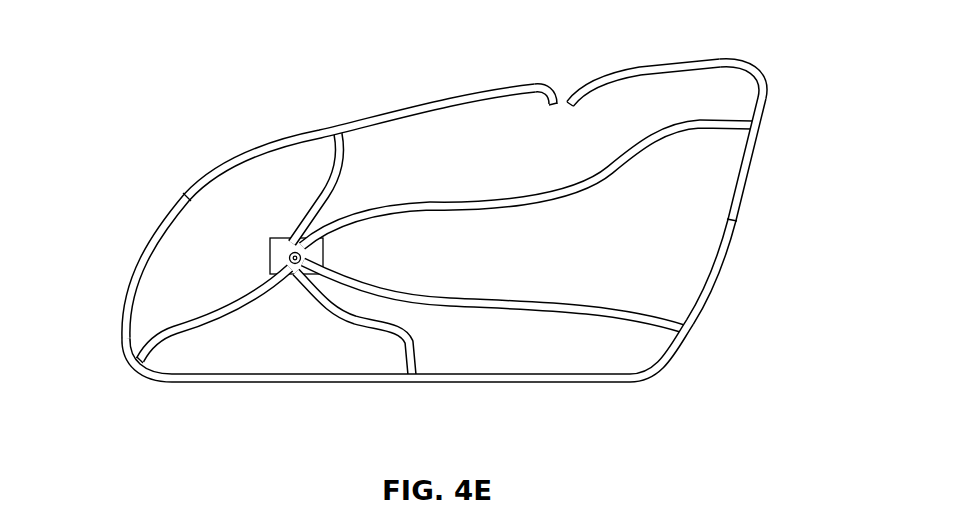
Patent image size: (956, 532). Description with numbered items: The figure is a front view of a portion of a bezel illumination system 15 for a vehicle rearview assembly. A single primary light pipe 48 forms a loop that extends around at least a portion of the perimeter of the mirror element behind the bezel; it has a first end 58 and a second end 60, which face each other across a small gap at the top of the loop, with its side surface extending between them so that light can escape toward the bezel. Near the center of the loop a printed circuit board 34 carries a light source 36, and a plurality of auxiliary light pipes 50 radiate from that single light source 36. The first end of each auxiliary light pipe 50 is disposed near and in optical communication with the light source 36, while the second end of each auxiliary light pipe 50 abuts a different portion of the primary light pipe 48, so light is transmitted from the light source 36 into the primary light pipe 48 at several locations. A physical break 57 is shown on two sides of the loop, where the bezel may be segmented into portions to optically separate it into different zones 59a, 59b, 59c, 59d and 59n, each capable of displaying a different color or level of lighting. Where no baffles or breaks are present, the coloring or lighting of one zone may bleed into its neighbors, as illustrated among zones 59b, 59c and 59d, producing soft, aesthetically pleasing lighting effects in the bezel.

The bezel illumination system 15 is at (226, 99).
The printed circuit board 34 is at (270, 258).
The light source 36 is at (276, 237).
The primary light pipe 48 is at (752, 167).
The auxiliary light pipe 50 is at (328, 183).
The physical break 57 is at (182, 199).
The first end 58 is at (574, 94).
The zone 59a is at (766, 68).
The zone 59b is at (713, 290).
The zone 59c is at (362, 384).
The zone 59d is at (123, 342).
The zone 59n is at (418, 106).
The second end 60 is at (540, 82).